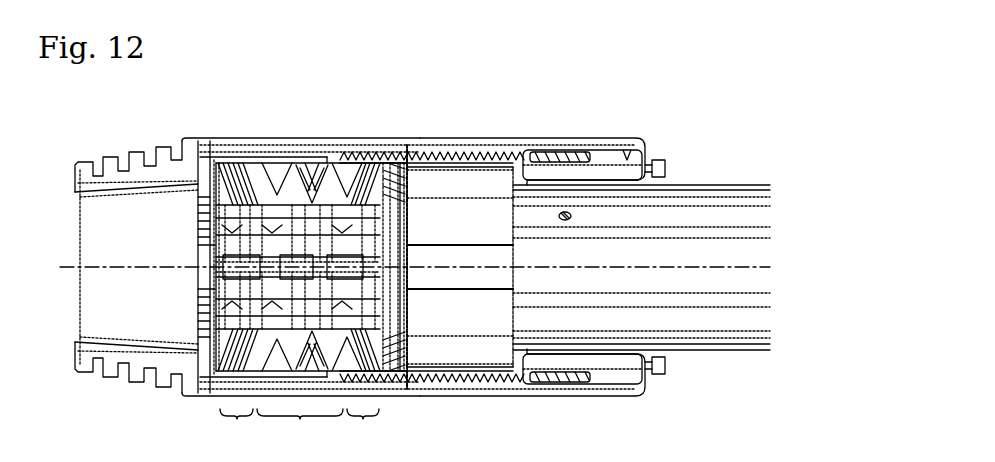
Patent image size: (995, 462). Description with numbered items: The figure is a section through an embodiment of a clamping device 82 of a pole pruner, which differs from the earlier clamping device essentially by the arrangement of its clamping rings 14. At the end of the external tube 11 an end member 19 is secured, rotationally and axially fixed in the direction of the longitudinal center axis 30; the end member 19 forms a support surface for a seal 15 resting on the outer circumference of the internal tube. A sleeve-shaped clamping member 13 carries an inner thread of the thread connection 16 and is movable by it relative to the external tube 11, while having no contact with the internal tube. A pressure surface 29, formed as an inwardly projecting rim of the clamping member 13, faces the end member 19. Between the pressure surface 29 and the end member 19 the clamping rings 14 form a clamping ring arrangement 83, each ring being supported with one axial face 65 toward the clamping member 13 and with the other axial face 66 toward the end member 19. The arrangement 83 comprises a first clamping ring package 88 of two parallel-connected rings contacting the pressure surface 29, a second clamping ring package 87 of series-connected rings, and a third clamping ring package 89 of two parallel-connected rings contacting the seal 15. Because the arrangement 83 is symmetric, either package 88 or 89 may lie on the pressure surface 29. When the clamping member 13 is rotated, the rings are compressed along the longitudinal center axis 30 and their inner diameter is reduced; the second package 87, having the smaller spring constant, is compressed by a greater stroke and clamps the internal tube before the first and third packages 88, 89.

The external tube 11 is at (704, 205).
The clamping member 13 is at (455, 143).
The clamping rings 14 is at (222, 180).
The seal 15 is at (400, 348).
The thread connection 16 is at (484, 152).
The end member 19 is at (547, 180).
The pressure surface 29 is at (213, 357).
The longitudinal center axis 30 is at (693, 272).
The axial face 65 is at (223, 178).
The axial face 66 is at (229, 178).
The clamping device 82 is at (227, 110).
The clamping ring arrangement 83 is at (304, 165).
The second clamping ring package 87 is at (300, 429).
The first clamping ring package 88 is at (236, 429).
The third clamping ring package 89 is at (363, 429).